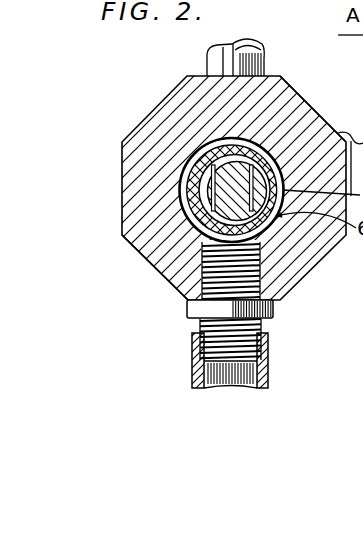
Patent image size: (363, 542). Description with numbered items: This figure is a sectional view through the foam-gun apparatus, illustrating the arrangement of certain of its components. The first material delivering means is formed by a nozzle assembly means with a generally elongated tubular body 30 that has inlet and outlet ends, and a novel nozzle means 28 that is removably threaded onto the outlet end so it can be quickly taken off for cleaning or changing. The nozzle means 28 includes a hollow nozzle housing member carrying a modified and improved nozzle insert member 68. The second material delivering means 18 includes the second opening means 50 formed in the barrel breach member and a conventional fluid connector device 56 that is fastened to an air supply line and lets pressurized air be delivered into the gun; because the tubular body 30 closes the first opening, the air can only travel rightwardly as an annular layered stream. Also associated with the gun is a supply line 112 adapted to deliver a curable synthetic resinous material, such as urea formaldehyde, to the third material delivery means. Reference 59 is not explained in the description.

The supply line 112 is at (207, 57).
The nozzle means 28 is at (194, 138).
The tubular body 30 is at (310, 106).
The second material delivering means 18 is at (179, 285).
The nozzle insert member 68 is at (231, 193).
The second opening means 50 is at (263, 259).
The fluid connector device 56 is at (273, 309).
The end cap 59 is at (268, 368).